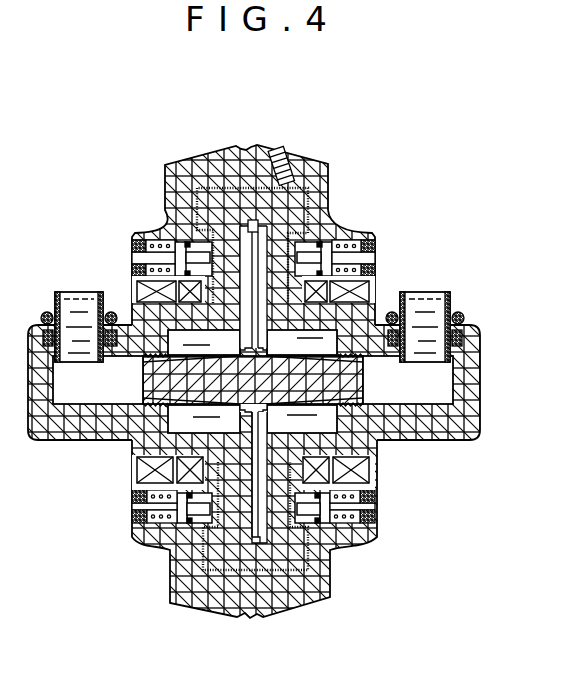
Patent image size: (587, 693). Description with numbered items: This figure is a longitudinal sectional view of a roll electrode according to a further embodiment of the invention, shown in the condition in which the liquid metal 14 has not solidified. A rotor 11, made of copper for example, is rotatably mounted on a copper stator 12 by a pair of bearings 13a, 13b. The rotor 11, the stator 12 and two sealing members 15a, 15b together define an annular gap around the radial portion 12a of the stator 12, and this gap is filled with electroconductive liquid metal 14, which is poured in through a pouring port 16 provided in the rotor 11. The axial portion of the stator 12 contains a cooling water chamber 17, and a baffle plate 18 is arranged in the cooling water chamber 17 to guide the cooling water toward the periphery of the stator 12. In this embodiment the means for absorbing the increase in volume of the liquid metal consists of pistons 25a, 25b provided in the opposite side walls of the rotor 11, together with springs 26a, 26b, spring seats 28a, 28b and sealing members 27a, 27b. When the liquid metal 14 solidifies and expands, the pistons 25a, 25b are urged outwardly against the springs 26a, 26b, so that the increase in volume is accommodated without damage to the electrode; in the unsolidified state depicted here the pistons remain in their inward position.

The rotor 11 is at (322, 181).
The stator 12 is at (465, 383).
The radial portion of the stator 12a is at (303, 238).
The bearing 13a is at (366, 294).
The bearing 13b is at (137, 292).
The liquid metal 14 is at (295, 212).
The sealing member 15a is at (360, 381).
The sealing member 15b is at (150, 457).
The pouring port 16 is at (284, 150).
The cooling water chamber 17 is at (440, 296).
The baffle plate 18 is at (252, 222).
The piston 25a is at (318, 244).
The piston 25b is at (200, 256).
The spring 26a is at (373, 246).
The spring 26b is at (134, 246).
The sealing member 27a is at (327, 250).
The sealing member 27b is at (184, 248).
The spring seat 28a is at (373, 270).
The spring seat 28b is at (134, 270).